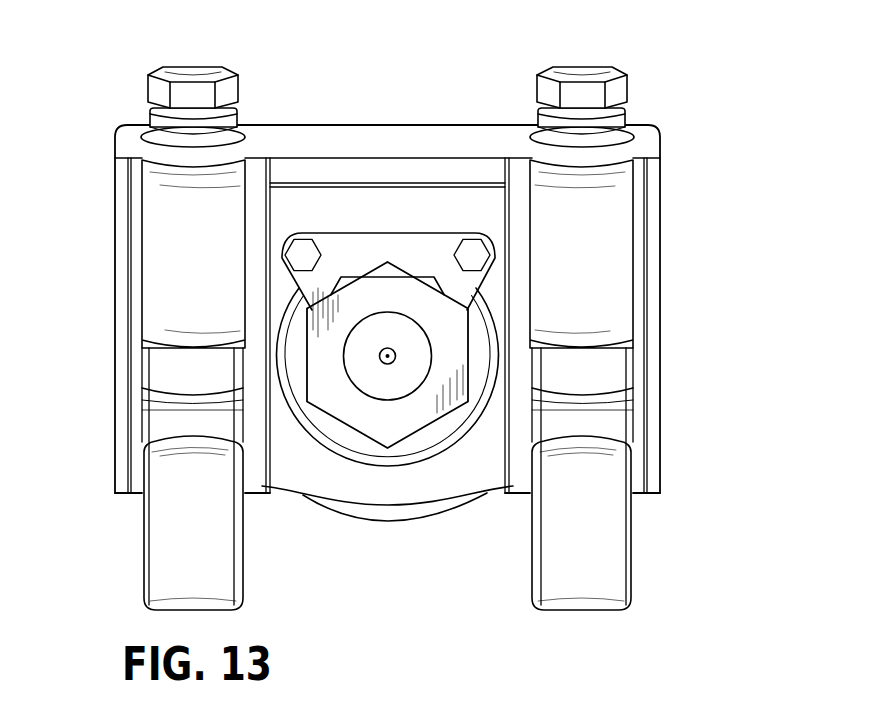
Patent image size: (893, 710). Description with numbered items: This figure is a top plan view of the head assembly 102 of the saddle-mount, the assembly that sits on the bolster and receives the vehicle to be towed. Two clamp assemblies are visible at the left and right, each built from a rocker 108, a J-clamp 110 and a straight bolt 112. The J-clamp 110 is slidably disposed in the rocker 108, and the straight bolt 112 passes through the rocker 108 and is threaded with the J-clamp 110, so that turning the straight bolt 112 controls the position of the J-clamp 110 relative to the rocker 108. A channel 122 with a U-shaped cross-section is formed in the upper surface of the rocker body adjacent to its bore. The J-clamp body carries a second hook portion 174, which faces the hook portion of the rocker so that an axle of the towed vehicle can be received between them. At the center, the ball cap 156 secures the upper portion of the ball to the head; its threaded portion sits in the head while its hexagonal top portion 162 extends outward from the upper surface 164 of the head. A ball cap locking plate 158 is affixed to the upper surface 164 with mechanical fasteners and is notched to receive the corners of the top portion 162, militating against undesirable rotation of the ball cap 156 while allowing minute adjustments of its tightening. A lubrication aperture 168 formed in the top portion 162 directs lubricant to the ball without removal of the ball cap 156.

The head assembly 102 is at (744, 139).
The rocker 108 is at (150, 263).
The J-clamp 110 is at (158, 425).
The straight bolt 112 is at (230, 71).
The channel 122 is at (140, 495).
The ball cap 156 is at (408, 437).
The ball cap locking plate 158 is at (399, 233).
The top portion 162 is at (372, 262).
The upper surface 164 is at (461, 482).
The lubrication aperture 168 is at (387, 365).
The second hook portion 174 is at (157, 562).